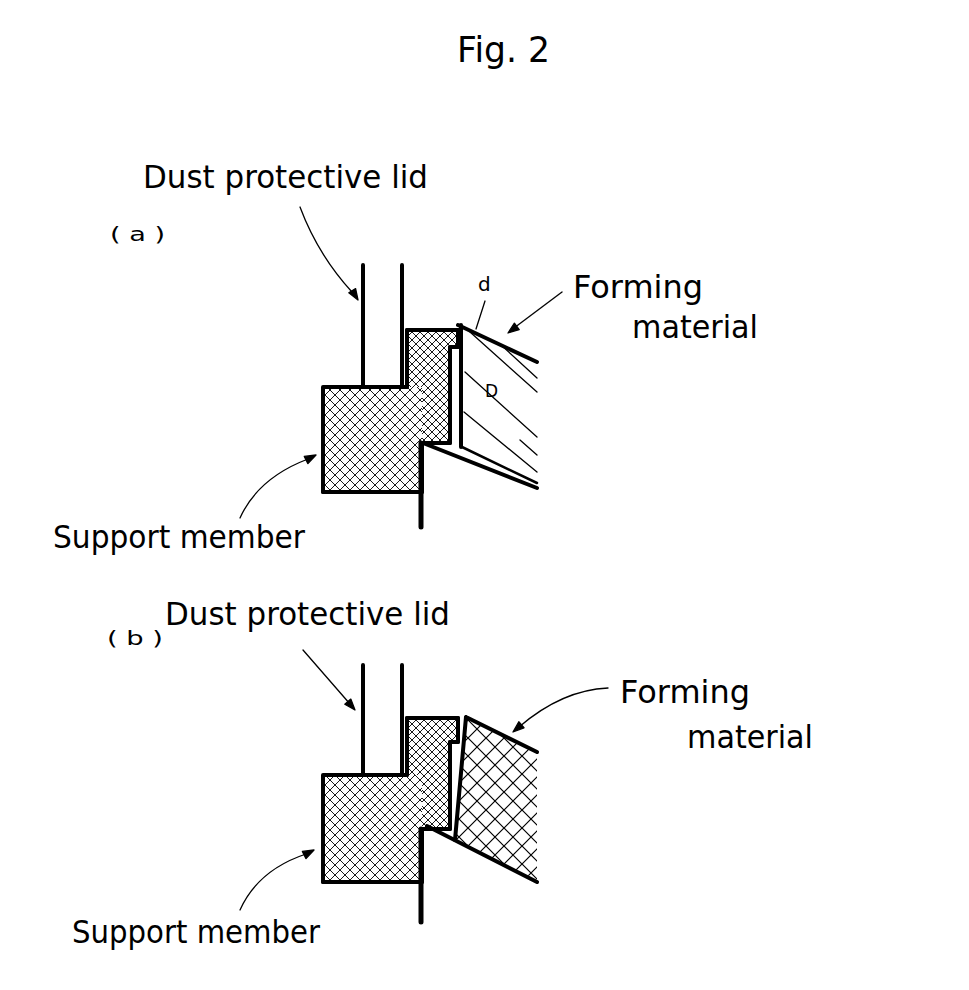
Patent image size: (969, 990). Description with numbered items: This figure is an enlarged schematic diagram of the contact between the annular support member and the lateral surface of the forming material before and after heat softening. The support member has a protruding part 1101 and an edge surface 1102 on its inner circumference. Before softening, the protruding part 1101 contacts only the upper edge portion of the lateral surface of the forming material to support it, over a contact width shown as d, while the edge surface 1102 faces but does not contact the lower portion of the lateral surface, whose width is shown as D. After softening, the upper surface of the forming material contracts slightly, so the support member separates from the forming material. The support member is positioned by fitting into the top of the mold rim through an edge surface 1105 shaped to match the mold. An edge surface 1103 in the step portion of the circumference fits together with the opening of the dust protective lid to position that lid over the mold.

The protruding part 1101 is at (428, 328).
The edge surface 1102 is at (428, 450).
The edge surface 1103 is at (340, 384).
The edge surface 1105 is at (402, 494).